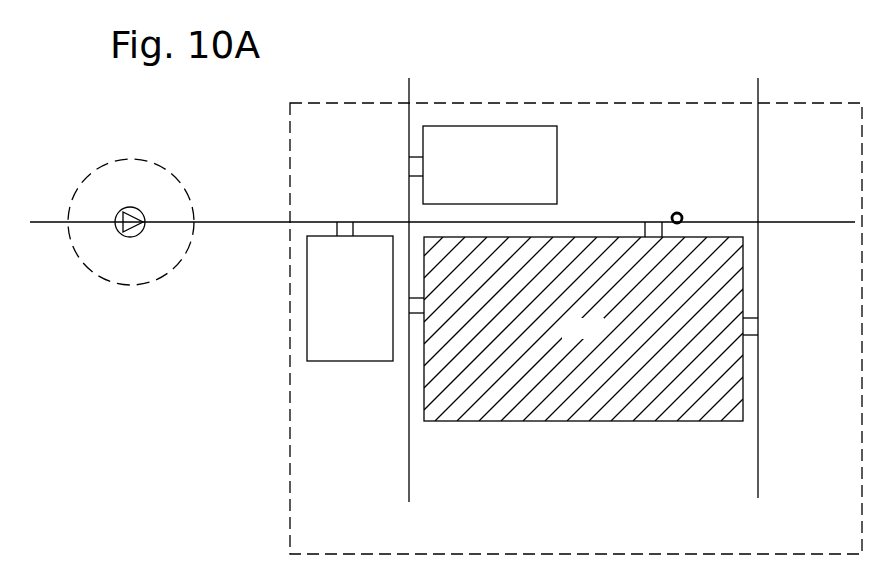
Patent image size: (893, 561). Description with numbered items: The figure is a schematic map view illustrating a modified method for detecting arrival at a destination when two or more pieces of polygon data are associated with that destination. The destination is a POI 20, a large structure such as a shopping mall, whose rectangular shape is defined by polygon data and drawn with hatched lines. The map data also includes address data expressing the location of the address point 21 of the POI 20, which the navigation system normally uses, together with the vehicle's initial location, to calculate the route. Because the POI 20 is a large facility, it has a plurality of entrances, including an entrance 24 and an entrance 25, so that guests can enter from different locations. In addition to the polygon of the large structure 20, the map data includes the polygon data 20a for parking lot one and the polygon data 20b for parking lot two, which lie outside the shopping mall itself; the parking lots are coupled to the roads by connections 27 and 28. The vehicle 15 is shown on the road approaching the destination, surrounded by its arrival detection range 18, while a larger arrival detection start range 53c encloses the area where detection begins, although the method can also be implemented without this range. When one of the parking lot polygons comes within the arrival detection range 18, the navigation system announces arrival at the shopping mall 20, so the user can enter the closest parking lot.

The arrival detection start range 53c is at (642, 102).
The arrival detection range 18 is at (100, 167).
The vehicle 15 is at (121, 211).
The polygon data for parking lot (1) 20a is at (498, 132).
The connection between road and parking (1) 27 is at (413, 168).
The polygon data for parking lot (2) 20b is at (313, 340).
The connection between road and parking (2) 28 is at (343, 220).
The POI (large structure) 20 is at (600, 423).
The entrance 24 is at (652, 222).
The address point 21 is at (681, 211).
The entrance 25 is at (760, 322).